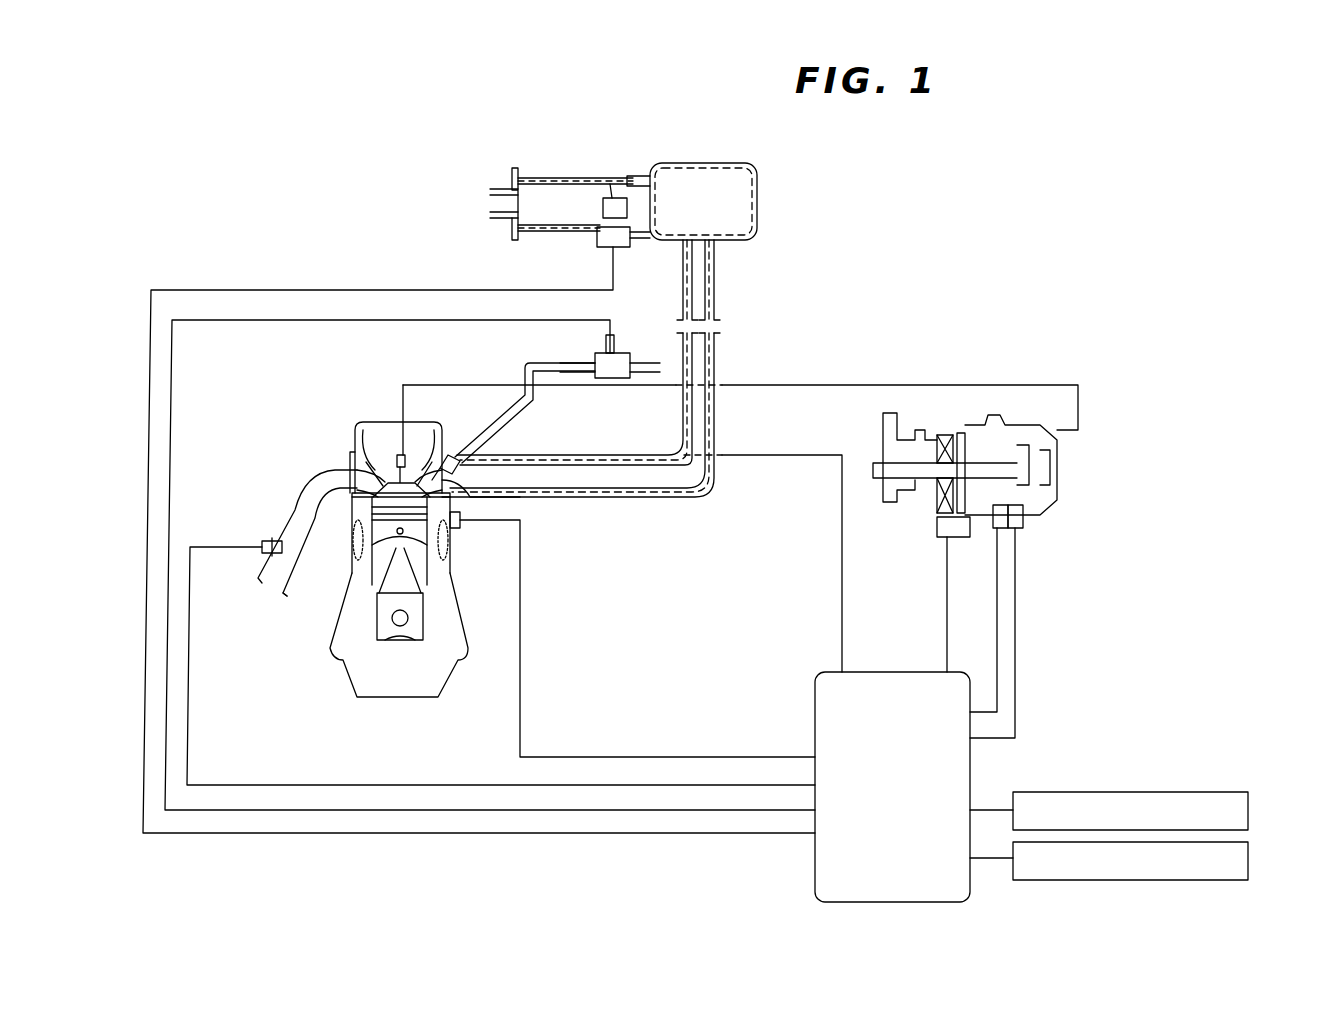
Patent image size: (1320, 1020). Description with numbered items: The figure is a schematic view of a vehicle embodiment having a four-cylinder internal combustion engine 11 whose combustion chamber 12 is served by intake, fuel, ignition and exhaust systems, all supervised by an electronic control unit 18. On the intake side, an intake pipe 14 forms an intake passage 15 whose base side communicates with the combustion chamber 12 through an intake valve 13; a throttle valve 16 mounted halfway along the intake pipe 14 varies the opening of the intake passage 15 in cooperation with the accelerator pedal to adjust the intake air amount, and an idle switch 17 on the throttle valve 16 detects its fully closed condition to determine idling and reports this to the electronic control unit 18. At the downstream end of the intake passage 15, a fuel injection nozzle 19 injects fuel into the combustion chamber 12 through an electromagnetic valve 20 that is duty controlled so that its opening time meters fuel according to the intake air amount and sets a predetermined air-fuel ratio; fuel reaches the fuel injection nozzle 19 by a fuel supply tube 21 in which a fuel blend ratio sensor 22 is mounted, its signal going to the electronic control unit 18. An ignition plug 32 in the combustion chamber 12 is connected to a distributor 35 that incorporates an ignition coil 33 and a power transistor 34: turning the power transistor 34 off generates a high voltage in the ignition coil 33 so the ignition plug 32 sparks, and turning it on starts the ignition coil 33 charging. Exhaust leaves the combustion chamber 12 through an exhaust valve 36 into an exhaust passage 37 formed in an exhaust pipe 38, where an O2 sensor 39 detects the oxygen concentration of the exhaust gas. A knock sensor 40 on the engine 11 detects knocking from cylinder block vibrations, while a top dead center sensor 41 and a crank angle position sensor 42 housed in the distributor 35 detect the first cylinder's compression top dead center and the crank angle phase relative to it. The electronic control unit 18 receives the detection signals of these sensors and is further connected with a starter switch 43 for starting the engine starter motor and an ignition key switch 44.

The engine 11 is at (352, 670).
The combustion chamber 12 is at (363, 528).
The intake valve 13 is at (448, 458).
The intake pipe 14 is at (547, 178).
The intake passage 15 is at (668, 497).
The throttle valve 16 is at (614, 196).
The idle switch 17 is at (597, 240).
The electronic control unit 18 is at (815, 692).
The fuel injection nozzle 19 is at (465, 490).
The electromagnetic valve 20 is at (540, 467).
The fuel supply tube 21 is at (525, 378).
The fuel blend ratio sensor 22 is at (615, 365).
The ignition plug 32 is at (390, 452).
The ignition coil 33 is at (940, 440).
The power transistor 34 is at (950, 530).
The distributor 35 is at (862, 436).
The exhaust valve 36 is at (360, 455).
The exhaust passage 37 is at (325, 480).
The exhaust pipe 38 is at (295, 593).
The O2 sensor 39 is at (268, 540).
The knock sensor 40 is at (462, 530).
The top dead center sensor 41 is at (1000, 528).
The crank angle position sensor 42 is at (1018, 528).
The starter switch 43 is at (1142, 792).
The ignition key switch 44 is at (1145, 880).